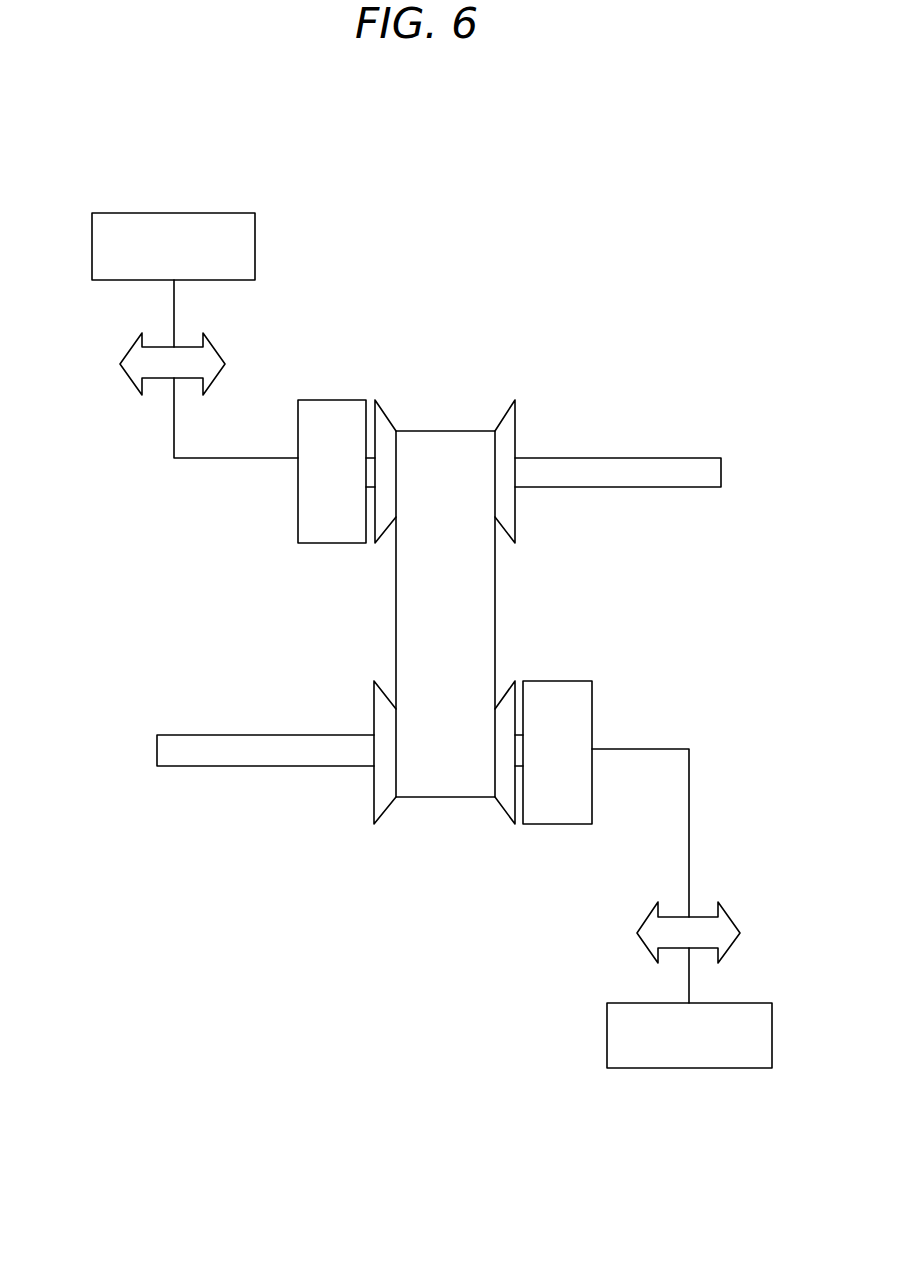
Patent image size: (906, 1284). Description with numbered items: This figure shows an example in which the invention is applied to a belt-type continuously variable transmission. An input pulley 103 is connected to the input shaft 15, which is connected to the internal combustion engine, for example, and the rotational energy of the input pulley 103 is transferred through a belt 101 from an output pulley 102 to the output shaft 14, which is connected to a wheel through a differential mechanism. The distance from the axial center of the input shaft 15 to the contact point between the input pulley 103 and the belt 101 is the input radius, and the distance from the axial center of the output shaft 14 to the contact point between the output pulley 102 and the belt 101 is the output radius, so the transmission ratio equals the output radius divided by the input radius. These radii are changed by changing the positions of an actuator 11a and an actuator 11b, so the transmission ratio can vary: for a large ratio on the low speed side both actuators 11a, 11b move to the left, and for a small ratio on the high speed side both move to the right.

The actuator 11a is at (207, 213).
The actuator 11b is at (689, 1068).
The output shaft 14 is at (207, 766).
The input shaft 15 is at (673, 457).
The belt 101 is at (445, 800).
The output pulley 102 is at (382, 818).
The input pulley 103 is at (498, 413).